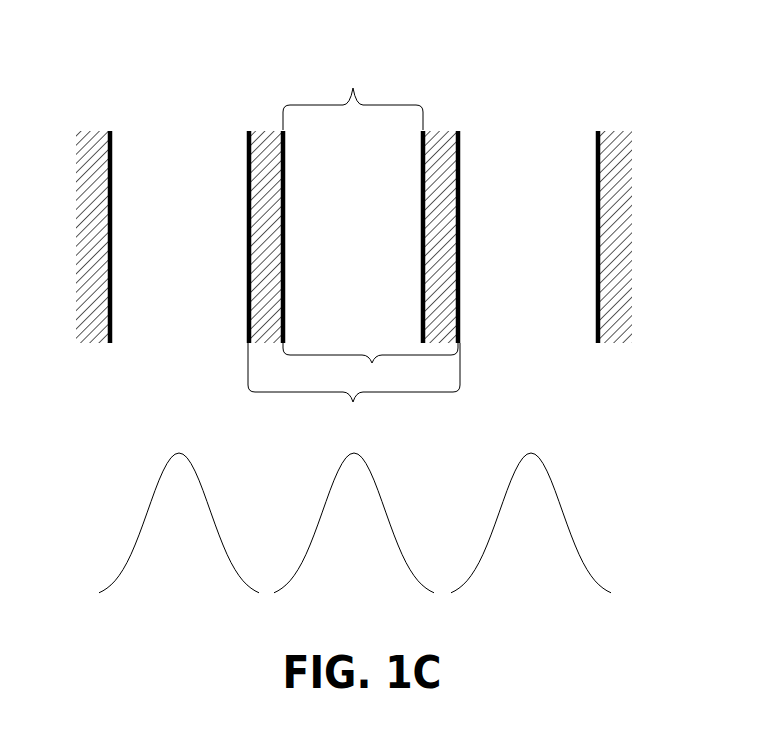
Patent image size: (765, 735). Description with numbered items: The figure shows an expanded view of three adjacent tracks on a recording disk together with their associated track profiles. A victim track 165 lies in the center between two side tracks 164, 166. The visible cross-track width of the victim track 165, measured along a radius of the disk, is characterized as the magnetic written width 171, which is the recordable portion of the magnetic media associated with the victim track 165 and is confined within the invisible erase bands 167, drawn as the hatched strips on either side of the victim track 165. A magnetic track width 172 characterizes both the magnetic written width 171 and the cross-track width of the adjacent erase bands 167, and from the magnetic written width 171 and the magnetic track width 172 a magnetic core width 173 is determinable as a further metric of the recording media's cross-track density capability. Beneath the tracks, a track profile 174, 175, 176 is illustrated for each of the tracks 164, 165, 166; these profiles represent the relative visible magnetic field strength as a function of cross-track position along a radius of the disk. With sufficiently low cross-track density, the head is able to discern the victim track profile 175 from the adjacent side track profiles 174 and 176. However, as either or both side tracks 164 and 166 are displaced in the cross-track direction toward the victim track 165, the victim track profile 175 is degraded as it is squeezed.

The side track 164 is at (197, 224).
The victim track 165 is at (367, 224).
The side track 166 is at (545, 224).
The erase bands 167 is at (493, 52).
The magnetic written width (MWW) 171 is at (353, 97).
The magnetic track width (MTW) 172 is at (354, 386).
The magnetic core width (MCW) 173 is at (370, 367).
The track profile 174 is at (217, 522).
The victim track profile 175 is at (387, 518).
The track profile 176 is at (572, 535).